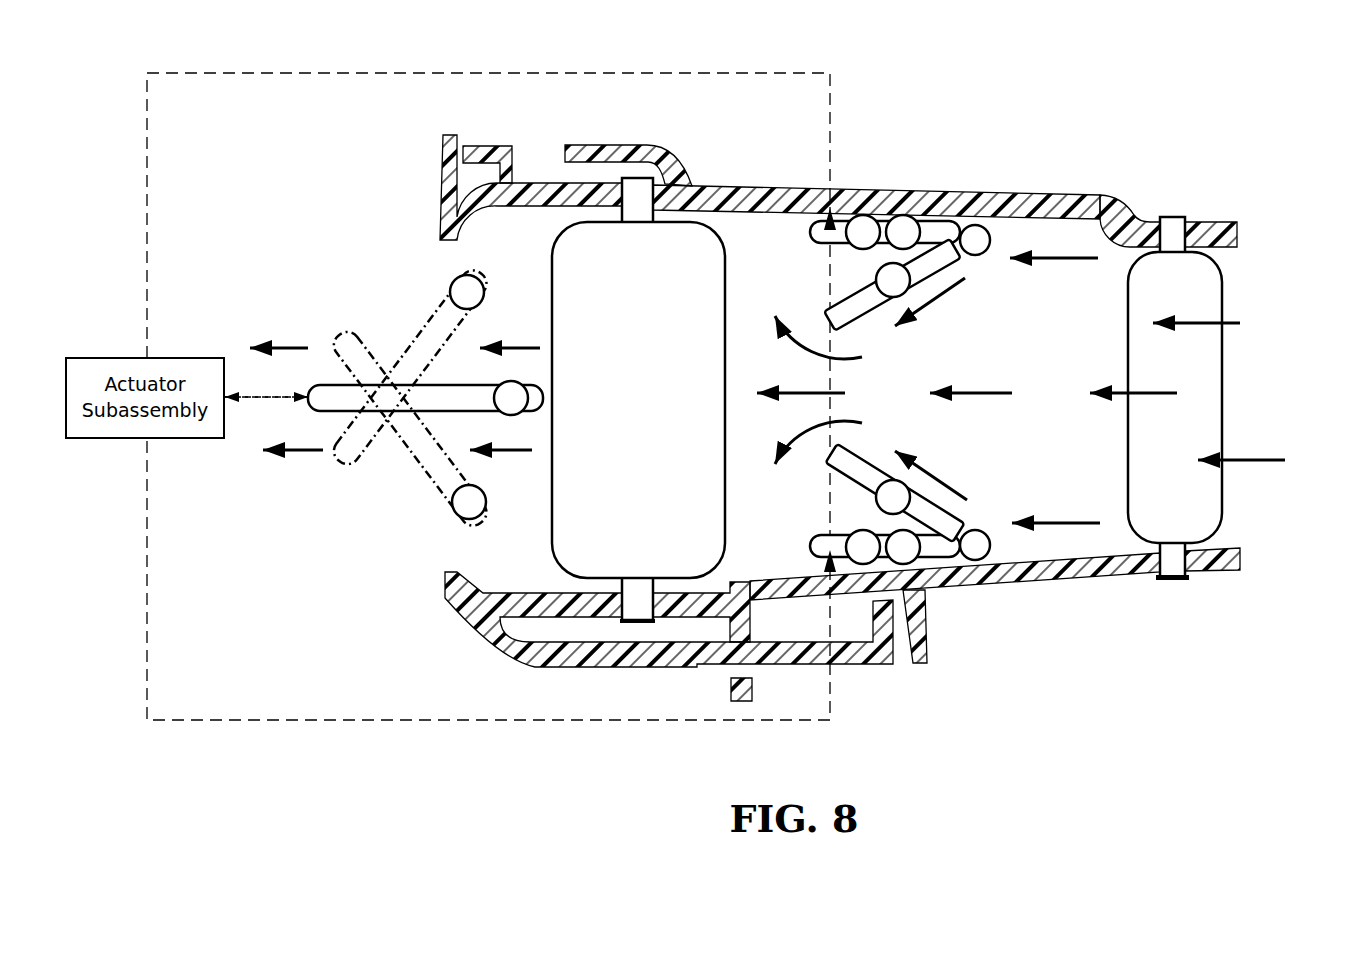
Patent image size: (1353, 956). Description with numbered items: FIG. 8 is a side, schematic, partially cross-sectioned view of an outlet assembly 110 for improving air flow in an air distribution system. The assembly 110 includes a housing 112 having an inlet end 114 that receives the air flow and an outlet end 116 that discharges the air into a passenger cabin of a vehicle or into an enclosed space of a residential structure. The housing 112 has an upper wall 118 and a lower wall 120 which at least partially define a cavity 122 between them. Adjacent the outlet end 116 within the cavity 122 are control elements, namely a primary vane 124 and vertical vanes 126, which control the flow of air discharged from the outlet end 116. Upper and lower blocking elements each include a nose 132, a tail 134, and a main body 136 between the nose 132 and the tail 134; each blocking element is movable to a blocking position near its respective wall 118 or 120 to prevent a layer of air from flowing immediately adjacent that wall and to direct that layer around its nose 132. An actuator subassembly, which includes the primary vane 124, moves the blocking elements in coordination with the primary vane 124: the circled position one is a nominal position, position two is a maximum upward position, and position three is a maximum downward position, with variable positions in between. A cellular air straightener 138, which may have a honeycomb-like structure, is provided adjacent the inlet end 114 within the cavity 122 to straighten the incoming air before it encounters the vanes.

The outlet assembly 110 is at (1055, 90).
The housing 112 is at (1147, 219).
The inlet end 114 is at (1240, 236).
The outlet end 116 is at (447, 576).
The upper wall 118 is at (1018, 190).
The lower wall 120 is at (1103, 573).
The cavity 122 is at (1000, 447).
The primary vane 124 is at (400, 403).
The vertical vanes 126 is at (638, 400).
The nose 132 is at (832, 320).
The tail 134 is at (985, 246).
The main body 136 is at (861, 318).
The cellular air straightener 138 is at (1187, 398).